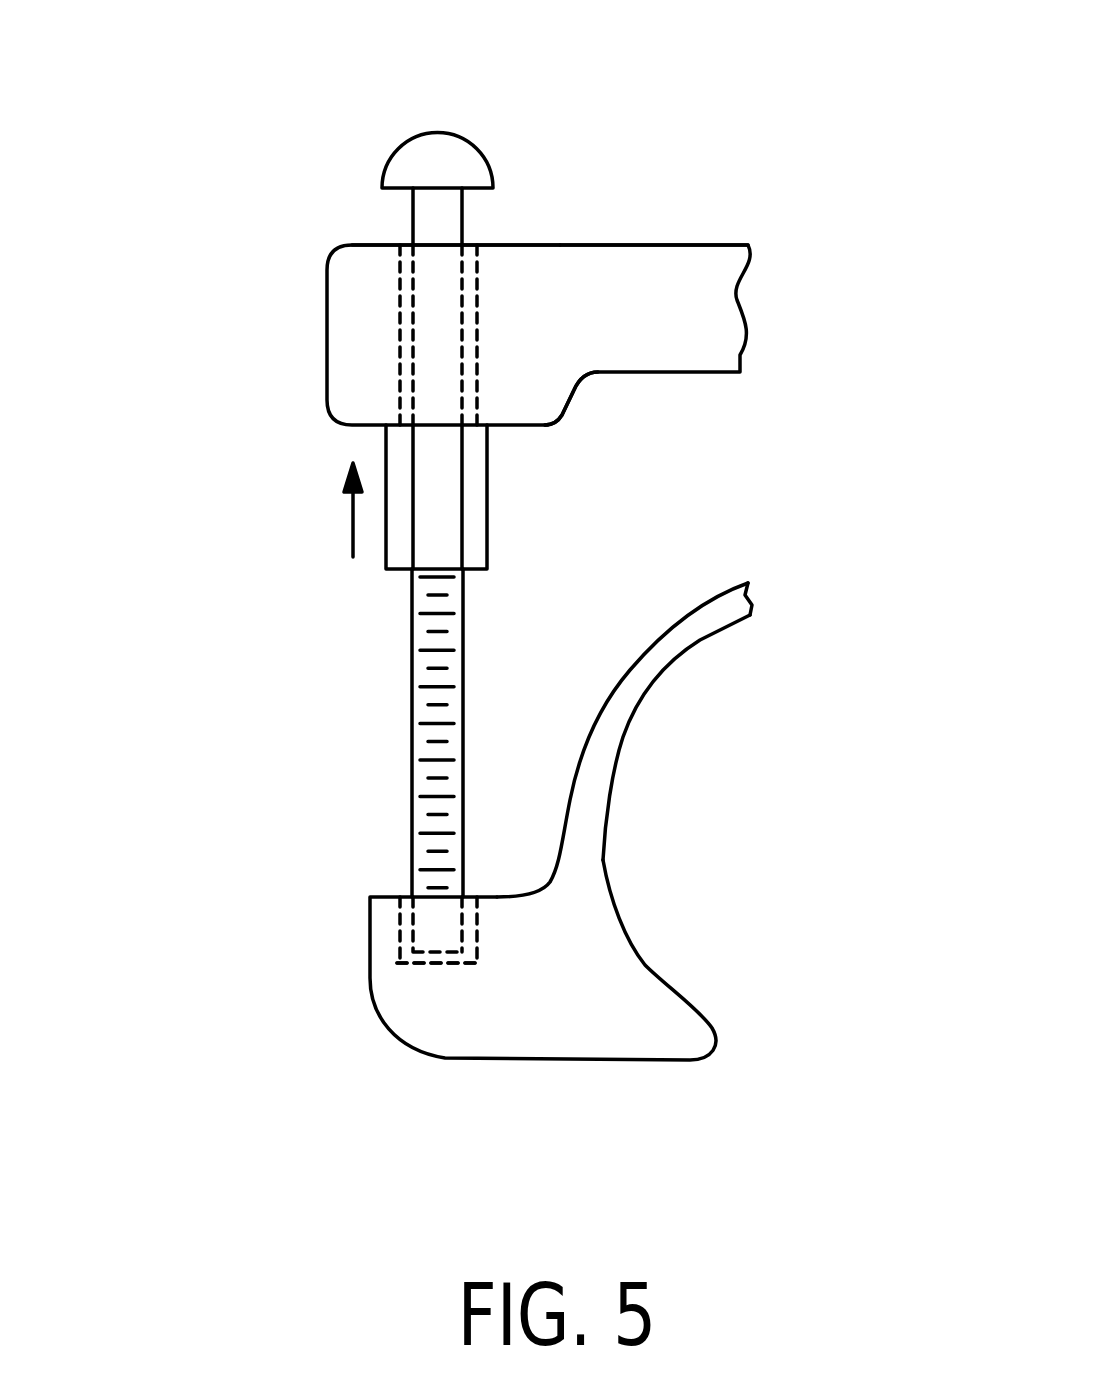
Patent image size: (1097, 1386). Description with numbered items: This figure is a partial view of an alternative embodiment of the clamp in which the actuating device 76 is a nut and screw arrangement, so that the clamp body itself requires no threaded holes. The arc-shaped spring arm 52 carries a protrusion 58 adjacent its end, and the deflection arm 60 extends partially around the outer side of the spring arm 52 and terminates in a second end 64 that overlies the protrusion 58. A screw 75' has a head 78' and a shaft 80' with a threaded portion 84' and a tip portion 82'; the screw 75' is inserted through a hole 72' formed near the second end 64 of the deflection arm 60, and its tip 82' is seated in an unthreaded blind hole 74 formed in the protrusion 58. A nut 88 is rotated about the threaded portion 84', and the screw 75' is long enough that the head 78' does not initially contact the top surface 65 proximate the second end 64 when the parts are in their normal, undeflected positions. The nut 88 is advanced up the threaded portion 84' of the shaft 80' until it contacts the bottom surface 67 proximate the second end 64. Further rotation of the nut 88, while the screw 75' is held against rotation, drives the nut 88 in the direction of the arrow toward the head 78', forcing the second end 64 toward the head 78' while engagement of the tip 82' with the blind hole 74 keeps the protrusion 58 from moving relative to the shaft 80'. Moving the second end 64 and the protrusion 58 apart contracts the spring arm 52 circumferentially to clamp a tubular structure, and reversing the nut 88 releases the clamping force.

The spring arm 52 is at (625, 735).
The protrusion 58 is at (417, 1053).
The deflection arm 60 is at (737, 245).
The second end of the deflection arm 64 is at (325, 283).
The top surface 65 is at (538, 245).
The bottom surface 67 is at (515, 427).
The hole 72' is at (338, 339).
The blind hole 74 is at (395, 963).
The screw 75' is at (411, 451).
The actuating device 76 is at (322, 629).
The head 78' is at (432, 97).
The shaft 80' is at (523, 732).
The tip portion 82' is at (338, 930).
The threaded portion 84' is at (330, 733).
The nut 88 is at (487, 487).